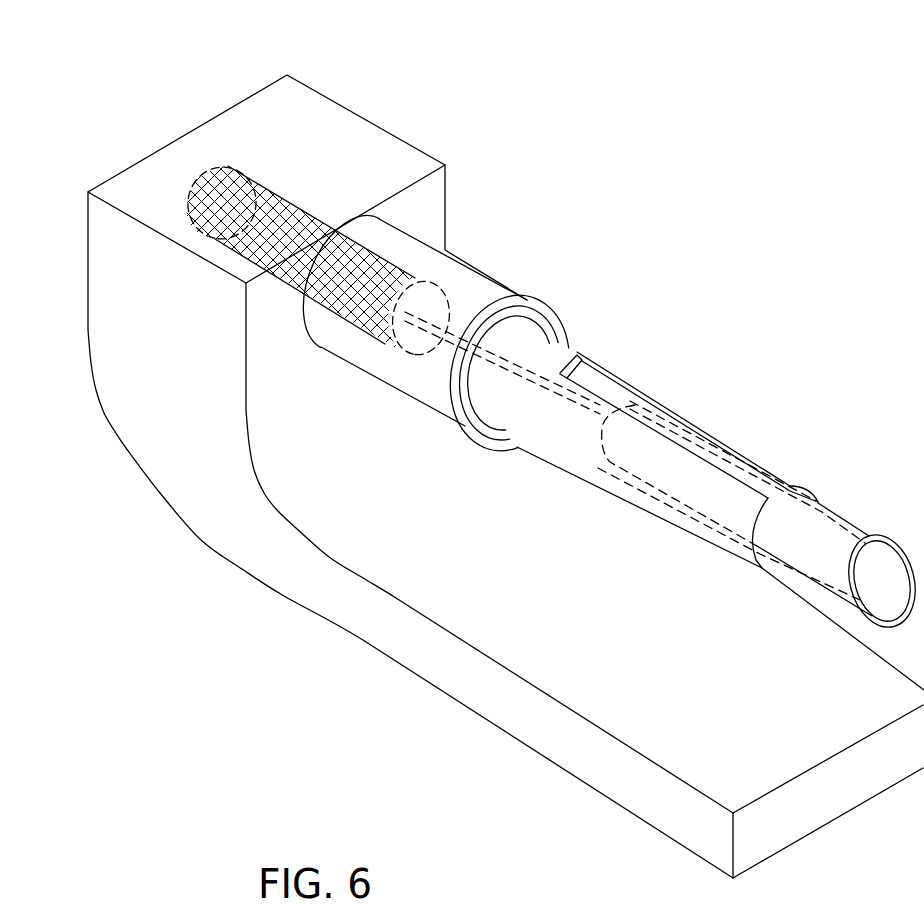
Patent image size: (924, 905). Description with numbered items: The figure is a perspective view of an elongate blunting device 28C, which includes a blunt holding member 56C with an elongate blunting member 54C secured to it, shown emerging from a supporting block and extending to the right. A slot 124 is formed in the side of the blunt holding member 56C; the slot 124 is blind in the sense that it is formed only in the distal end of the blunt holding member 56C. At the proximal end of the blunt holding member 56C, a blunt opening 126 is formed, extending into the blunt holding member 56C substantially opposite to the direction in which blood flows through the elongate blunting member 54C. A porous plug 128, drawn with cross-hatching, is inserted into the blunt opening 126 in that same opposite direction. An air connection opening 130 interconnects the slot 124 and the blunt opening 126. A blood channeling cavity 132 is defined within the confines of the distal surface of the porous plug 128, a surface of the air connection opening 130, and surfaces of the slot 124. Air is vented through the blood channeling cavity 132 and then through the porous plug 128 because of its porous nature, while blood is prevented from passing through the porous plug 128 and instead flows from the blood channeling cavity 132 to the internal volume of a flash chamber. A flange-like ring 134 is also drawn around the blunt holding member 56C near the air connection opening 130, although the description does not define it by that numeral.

The elongate blunting device 28C is at (197, 110).
The blunt opening 126 is at (205, 178).
The porous plug 128 is at (288, 200).
The air connection opening 130 is at (457, 330).
The flange ring 134 is at (548, 307).
The blunt holding member 56C is at (553, 347).
The blood channeling cavity 132 is at (609, 394).
The slot 124 is at (697, 443).
The elongate blunting member 54C is at (817, 540).